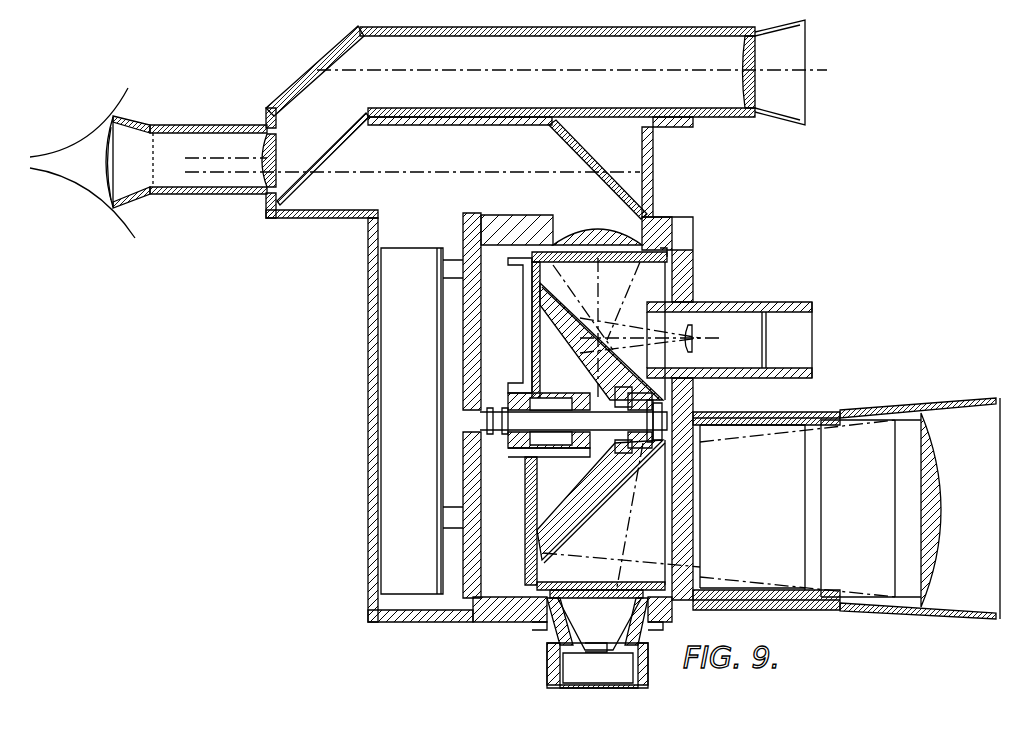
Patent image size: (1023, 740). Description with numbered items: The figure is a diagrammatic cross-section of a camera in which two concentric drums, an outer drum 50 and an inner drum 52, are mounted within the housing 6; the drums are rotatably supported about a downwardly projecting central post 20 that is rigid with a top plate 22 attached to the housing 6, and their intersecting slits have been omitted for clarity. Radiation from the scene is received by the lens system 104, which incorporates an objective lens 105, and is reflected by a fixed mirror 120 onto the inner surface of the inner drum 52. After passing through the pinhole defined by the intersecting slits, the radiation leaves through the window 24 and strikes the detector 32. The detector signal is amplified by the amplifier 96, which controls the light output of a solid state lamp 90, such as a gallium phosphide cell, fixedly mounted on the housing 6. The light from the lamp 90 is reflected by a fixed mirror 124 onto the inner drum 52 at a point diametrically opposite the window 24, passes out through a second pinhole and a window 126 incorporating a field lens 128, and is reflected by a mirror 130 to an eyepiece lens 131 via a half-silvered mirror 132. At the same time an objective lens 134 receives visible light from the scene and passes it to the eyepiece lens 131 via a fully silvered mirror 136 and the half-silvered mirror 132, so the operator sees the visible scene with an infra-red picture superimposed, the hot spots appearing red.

The housing 6 is at (503, 626).
The central post 20 is at (685, 402).
The top plate 22 is at (588, 597).
The apertured surround 24 is at (558, 622).
The detector 32 is at (583, 679).
The outer drum 50 is at (607, 582).
The inner drum 52 is at (693, 573).
The solid state lamp 90 is at (725, 352).
The amplifier 96 is at (408, 458).
The lens system 104 is at (860, 574).
The objective lens 105 is at (940, 530).
The fixed mirror 120 is at (590, 515).
The fixed mirror 124 is at (587, 342).
The window 126 is at (564, 222).
The field lens 128 is at (620, 233).
The mirror 130 is at (570, 143).
The eyepiece lens 131 is at (273, 164).
The half-silvered mirror 132 is at (323, 160).
The objective lens 134 is at (747, 57).
The fully silvered mirror 136 is at (312, 72).